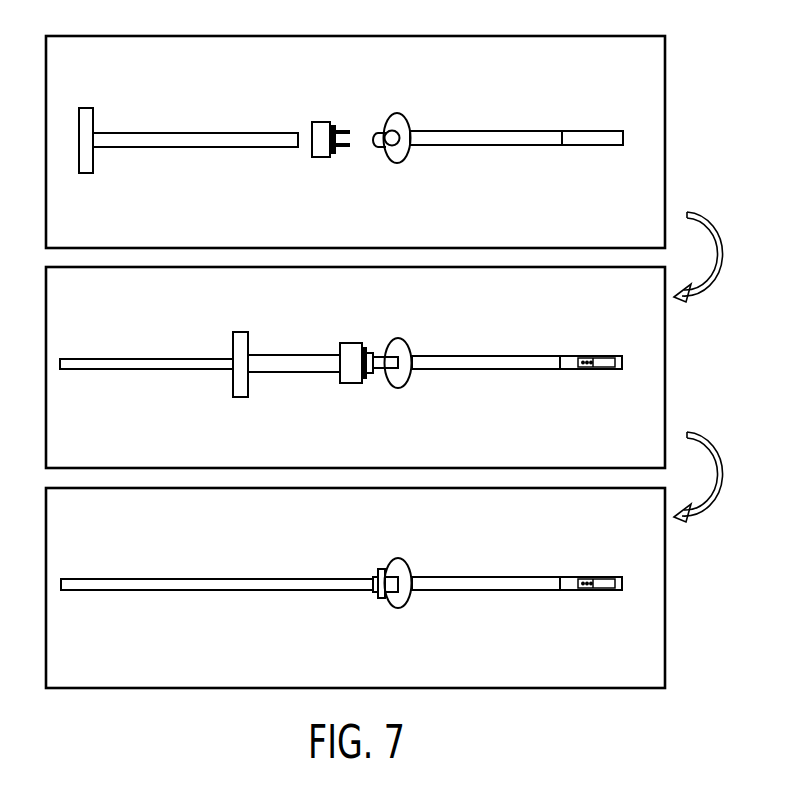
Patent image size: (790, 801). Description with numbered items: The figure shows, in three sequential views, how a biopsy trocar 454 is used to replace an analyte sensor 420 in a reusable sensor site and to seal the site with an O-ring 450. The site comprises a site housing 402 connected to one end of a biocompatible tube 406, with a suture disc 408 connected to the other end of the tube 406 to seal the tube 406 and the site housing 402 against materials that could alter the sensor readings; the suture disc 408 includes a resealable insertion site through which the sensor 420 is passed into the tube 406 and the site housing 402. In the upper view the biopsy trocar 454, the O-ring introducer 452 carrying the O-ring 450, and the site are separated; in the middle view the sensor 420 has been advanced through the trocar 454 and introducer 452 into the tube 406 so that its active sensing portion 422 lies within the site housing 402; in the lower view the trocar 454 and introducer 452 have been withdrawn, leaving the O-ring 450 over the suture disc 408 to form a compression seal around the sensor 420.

The site housing 402 is at (593, 146).
The tube 406 is at (498, 138).
The suture disc 408 is at (397, 113).
The sensor 420 is at (116, 358).
The active sensing portion 422 is at (584, 380).
The O-ring 450 is at (335, 122).
The O-ring introducer 452 is at (318, 158).
The biopsy trocar 454 is at (138, 132).